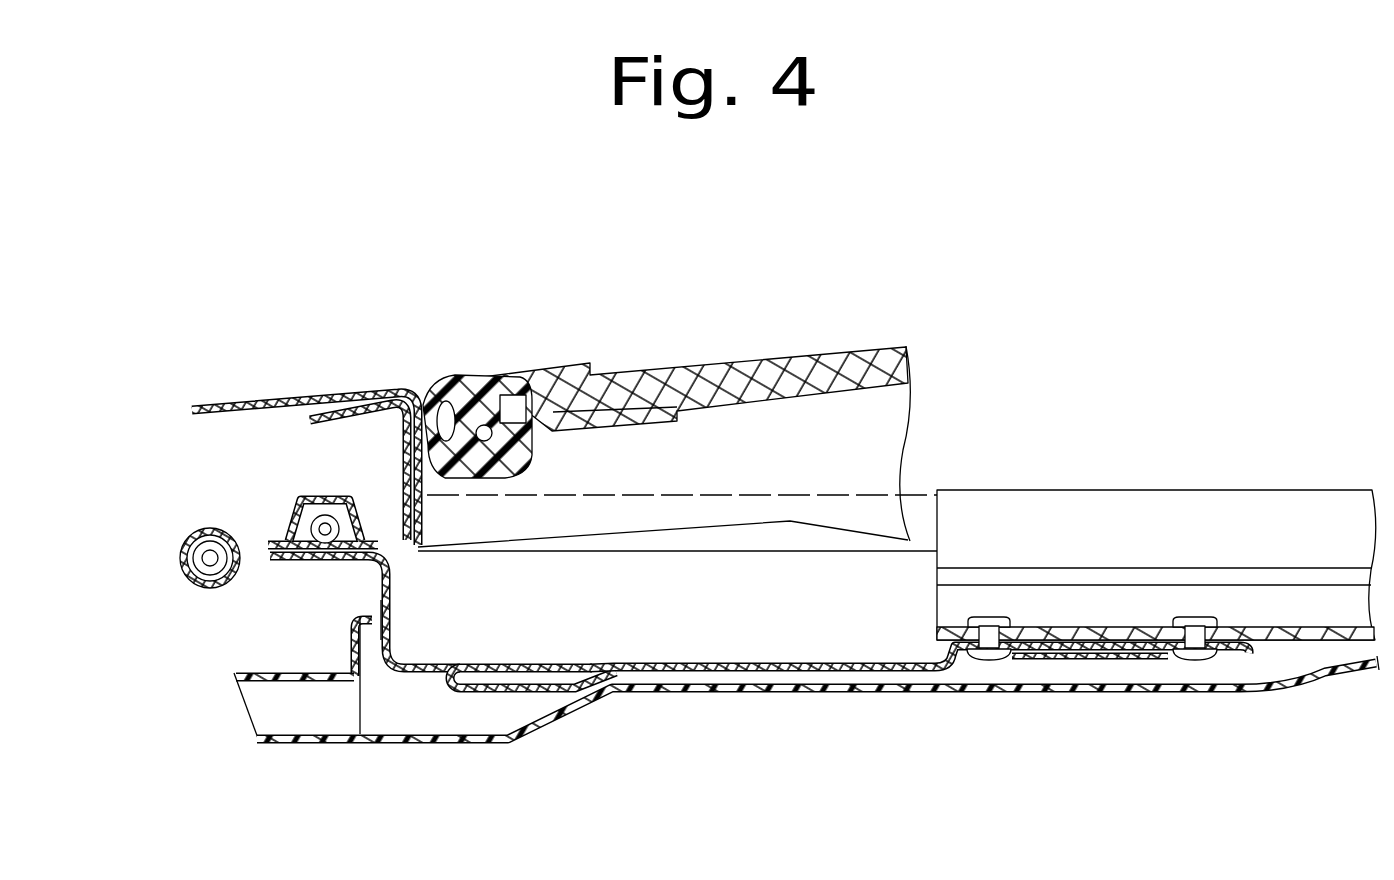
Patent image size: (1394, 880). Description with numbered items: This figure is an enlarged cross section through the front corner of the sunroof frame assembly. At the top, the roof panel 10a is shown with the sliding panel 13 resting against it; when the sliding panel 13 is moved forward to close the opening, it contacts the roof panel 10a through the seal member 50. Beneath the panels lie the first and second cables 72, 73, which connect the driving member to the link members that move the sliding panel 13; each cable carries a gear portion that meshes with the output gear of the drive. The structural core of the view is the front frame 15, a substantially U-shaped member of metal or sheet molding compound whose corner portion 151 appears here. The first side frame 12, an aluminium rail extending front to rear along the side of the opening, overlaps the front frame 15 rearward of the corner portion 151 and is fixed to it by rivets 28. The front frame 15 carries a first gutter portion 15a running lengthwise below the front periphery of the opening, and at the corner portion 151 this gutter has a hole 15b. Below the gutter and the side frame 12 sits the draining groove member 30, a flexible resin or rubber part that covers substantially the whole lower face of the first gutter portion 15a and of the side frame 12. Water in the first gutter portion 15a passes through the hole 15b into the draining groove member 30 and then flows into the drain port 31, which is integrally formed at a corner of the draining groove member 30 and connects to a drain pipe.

The roof panel 10a is at (283, 396).
The seal member 50 is at (458, 376).
The sliding panel 13 is at (683, 366).
The side frame 12 is at (1084, 622).
The second cable 73 is at (295, 510).
The first cable 72 is at (183, 560).
The front frame 15 is at (372, 574).
The first gutter portion 15a is at (672, 662).
The hole 15b is at (517, 682).
The corner portion 151 is at (366, 617).
The drain port 31 is at (311, 683).
The draining groove member 30 is at (508, 752).
The rivet 28 is at (990, 660).